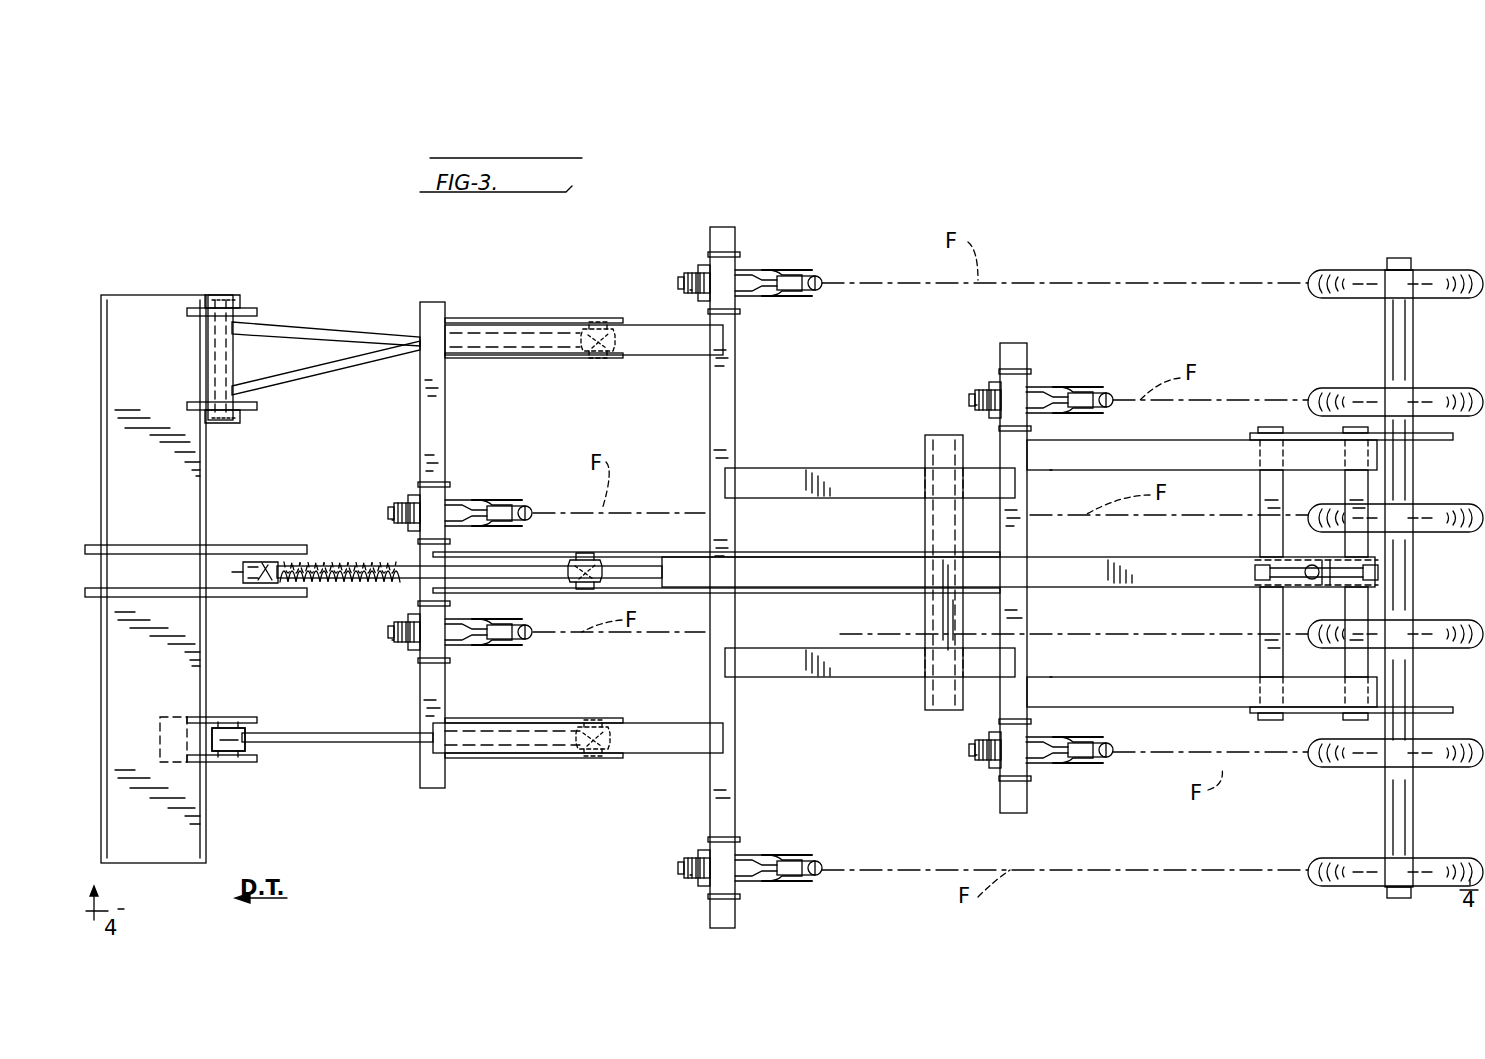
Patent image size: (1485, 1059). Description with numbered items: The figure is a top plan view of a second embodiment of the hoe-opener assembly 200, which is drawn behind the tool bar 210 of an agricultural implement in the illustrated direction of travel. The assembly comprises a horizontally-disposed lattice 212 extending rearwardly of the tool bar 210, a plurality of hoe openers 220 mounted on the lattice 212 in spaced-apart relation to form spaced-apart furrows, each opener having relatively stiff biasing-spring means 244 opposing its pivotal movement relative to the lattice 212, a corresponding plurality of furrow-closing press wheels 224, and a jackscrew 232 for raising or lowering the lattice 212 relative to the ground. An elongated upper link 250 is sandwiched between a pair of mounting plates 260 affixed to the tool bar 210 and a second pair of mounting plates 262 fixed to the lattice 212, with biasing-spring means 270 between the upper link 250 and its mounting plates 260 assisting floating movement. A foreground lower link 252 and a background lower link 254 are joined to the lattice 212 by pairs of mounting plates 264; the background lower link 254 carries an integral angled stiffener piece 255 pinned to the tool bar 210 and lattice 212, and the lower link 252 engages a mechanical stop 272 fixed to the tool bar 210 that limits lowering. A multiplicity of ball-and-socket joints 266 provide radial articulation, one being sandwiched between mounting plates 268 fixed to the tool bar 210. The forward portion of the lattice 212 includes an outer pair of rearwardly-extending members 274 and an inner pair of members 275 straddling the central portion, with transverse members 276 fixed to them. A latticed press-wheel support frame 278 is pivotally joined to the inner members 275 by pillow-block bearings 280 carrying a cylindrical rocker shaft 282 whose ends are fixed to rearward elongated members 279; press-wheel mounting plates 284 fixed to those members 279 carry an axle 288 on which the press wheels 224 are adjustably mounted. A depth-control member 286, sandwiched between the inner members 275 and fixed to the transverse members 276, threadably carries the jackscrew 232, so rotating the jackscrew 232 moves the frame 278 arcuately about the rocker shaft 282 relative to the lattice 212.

The hoe-opener assembly 200 is at (233, 276).
The tool bar 210 is at (102, 320).
The lattice 212 is at (832, 682).
The hoe openers 220 is at (790, 280).
The furrow-closing press wheels 224 is at (1430, 290).
The jackscrew 232 is at (1308, 578).
The biasing-spring means 244 is at (692, 290).
The elongated upper link 250 is at (470, 567).
The elongated lower link 252 is at (345, 742).
The elongated lower link 254 is at (357, 324).
The angled stiffener piece 255 is at (345, 372).
The mounting plates 260 is at (234, 544).
The mounting plates 262 is at (685, 553).
The mounting plates 264 is at (606, 320).
The ball-and-socket joints 266 is at (604, 330).
The mounting plates 268 is at (238, 716).
The biasing-spring means 270 is at (352, 564).
The mechanical stop 272 is at (258, 748).
The rearwardly-extending members 274 is at (578, 539).
The rearwardly-extending members 275 is at (870, 572).
The transverse members 276 is at (440, 448).
The press-wheel support frame 278 is at (1110, 440).
The elongated members 279 is at (1195, 470).
The pillow-block bearings 280 is at (905, 485).
The rocker shaft 282 is at (935, 530).
The press-wheel mounting plates 284 is at (1455, 432).
The depth-control member 286 is at (1018, 572).
The axle 288 is at (1398, 258).